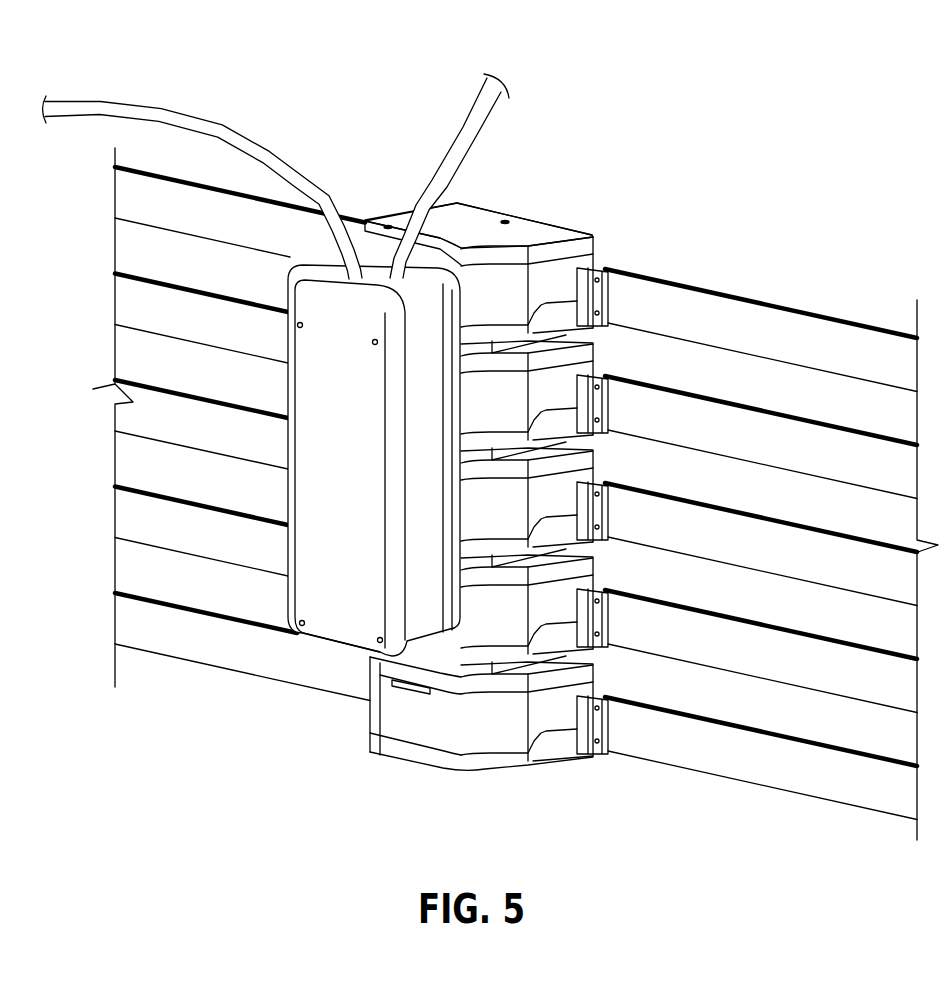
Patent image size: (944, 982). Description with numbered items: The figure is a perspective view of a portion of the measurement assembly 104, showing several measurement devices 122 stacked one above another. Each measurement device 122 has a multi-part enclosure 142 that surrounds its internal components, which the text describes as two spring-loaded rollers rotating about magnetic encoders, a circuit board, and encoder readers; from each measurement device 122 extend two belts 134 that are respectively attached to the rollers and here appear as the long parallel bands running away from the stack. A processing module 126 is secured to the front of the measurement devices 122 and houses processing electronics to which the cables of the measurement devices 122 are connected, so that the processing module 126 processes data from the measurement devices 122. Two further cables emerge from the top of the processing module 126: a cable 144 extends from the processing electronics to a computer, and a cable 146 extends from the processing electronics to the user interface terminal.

The measurement assembly 104 is at (486, 420).
The measurement device 122 is at (470, 518).
The multi-part enclosure 142 is at (395, 764).
The processing module 126 is at (276, 596).
The belt 134 is at (859, 311).
The cable 144 is at (71, 135).
The cable 146 is at (514, 110).